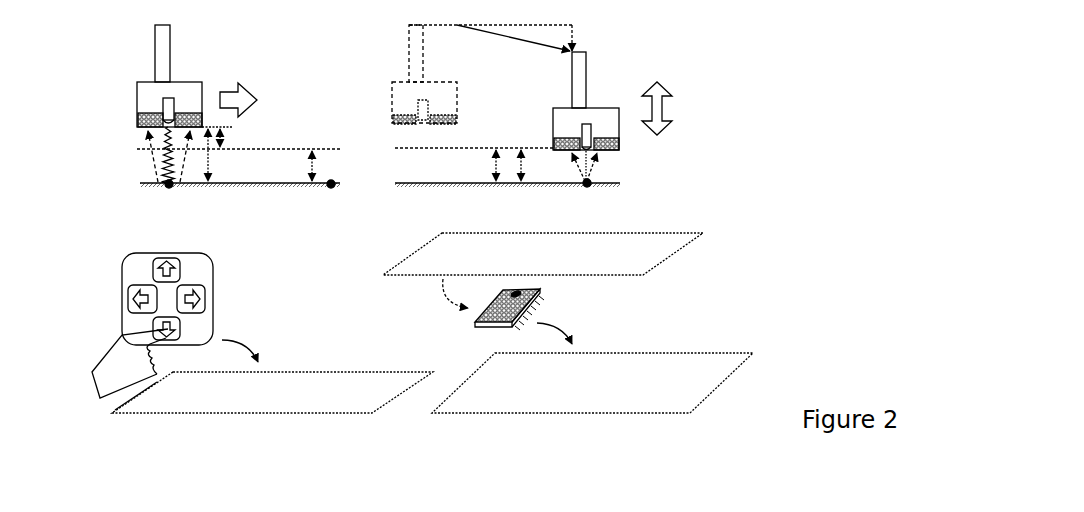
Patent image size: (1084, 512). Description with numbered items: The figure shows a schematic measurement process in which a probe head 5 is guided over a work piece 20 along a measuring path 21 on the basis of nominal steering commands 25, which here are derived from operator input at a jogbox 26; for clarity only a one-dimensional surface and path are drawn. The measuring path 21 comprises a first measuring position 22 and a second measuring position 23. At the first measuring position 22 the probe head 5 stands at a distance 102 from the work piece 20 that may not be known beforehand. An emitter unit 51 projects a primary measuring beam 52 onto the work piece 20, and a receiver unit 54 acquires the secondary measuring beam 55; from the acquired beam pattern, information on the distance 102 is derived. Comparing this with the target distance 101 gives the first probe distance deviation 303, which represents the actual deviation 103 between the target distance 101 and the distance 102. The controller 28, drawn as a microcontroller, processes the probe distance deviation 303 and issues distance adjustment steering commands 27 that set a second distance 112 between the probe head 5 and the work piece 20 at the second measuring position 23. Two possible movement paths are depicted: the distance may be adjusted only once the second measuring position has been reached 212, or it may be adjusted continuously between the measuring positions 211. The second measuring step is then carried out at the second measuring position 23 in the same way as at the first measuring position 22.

The probe head 5 is at (210, 74).
The work piece 20 is at (218, 214).
The measuring path 21 is at (282, 189).
The first measuring position 22 is at (166, 188).
The second measuring position 23 is at (327, 188).
The nominal steering commands 25 is at (258, 94).
The jogbox 26 is at (214, 280).
The distance adjustment steering commands 27 is at (668, 83).
The controller 28 is at (543, 290).
The emitter unit 51 is at (163, 104).
The primary measuring beam 52 is at (160, 168).
The receiver unit 54 is at (150, 118).
The secondary measuring beam 55 is at (155, 146).
The target distance 101 is at (314, 168).
The distance 102 is at (212, 168).
The deviation 103 is at (222, 141).
The second distance 112 is at (493, 172).
The continuous adjustment path 211 is at (525, 47).
The adjustment at second position 212 is at (580, 35).
The first probe distance deviation 303 is at (660, 233).